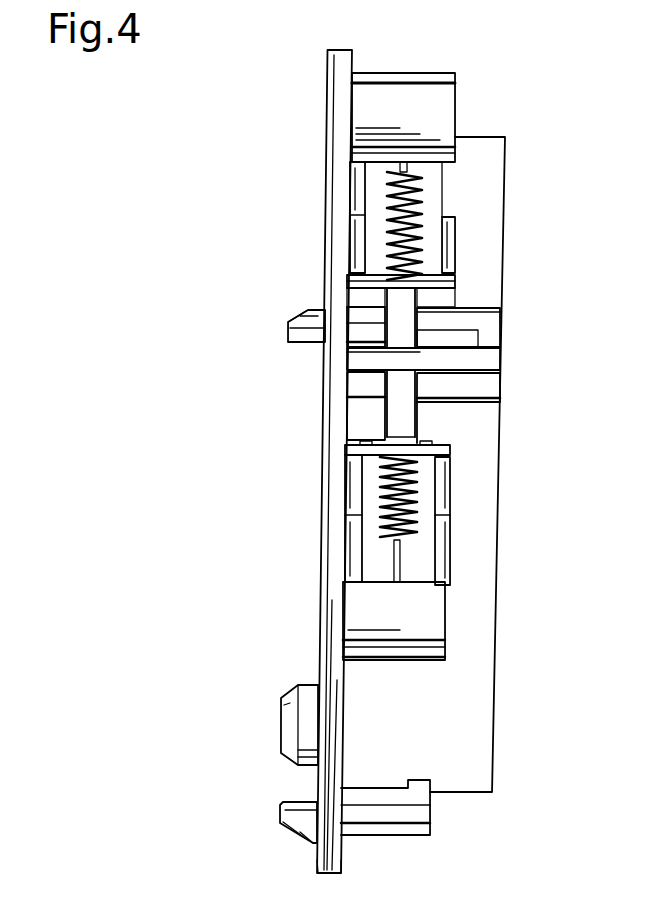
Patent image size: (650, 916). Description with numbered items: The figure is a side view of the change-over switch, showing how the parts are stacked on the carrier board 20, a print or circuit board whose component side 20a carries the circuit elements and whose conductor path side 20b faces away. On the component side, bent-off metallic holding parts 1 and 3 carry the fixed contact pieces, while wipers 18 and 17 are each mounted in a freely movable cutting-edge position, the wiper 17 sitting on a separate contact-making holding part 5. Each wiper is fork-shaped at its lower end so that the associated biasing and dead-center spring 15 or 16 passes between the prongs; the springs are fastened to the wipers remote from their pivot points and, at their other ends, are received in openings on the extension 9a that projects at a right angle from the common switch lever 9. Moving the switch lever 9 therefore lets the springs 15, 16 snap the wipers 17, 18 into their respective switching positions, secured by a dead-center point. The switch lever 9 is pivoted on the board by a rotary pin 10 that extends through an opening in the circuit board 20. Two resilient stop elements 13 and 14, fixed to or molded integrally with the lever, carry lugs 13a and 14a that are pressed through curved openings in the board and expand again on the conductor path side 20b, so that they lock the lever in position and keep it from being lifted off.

The holding part 1 is at (449, 102).
The holding part 3 is at (438, 613).
The contact-making holding part 5 is at (457, 448).
The switch lever 9 is at (482, 692).
The extension of the switch lever 9a is at (483, 366).
The rotary pin 10 is at (293, 698).
The resilient stop element 13 is at (303, 802).
The lug 13a is at (318, 843).
The resilient stop element 14 is at (300, 342).
The lug 14a is at (312, 317).
The biasing and dead-center spring 15 is at (423, 193).
The biasing and dead-center spring 16 is at (416, 543).
The wiper 17 is at (436, 497).
The wiper 18 is at (436, 208).
The carrier board 20 is at (327, 85).
The component side 20a is at (354, 865).
The conductor path side 20b is at (332, 868).